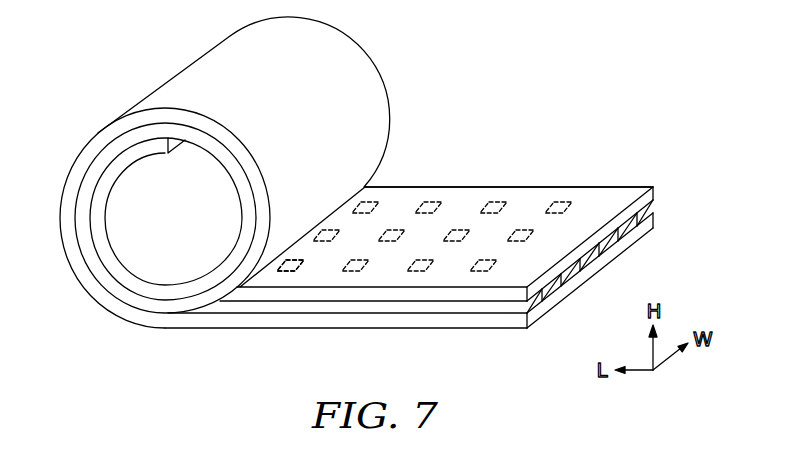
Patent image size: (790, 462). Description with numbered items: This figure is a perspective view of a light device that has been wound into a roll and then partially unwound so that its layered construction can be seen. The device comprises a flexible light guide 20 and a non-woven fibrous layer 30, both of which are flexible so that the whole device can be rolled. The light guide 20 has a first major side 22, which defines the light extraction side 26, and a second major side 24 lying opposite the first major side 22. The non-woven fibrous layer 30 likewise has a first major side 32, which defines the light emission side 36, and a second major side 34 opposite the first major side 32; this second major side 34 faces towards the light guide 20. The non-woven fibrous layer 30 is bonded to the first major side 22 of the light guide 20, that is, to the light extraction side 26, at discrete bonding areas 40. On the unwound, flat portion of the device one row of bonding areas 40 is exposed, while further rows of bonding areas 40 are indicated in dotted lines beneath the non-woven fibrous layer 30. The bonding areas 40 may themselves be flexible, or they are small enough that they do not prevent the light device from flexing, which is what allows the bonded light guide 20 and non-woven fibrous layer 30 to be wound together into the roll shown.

The light guide 20 is at (473, 320).
The first major side 22 is at (378, 314).
The second major side 24 is at (425, 329).
The light extraction side 26 is at (327, 305).
The non-woven fibrous layer 30 is at (656, 189).
The first major side 32 is at (472, 195).
The second major side 34 is at (610, 238).
The light emission side 36 is at (595, 197).
The bonding areas 40 is at (281, 271).